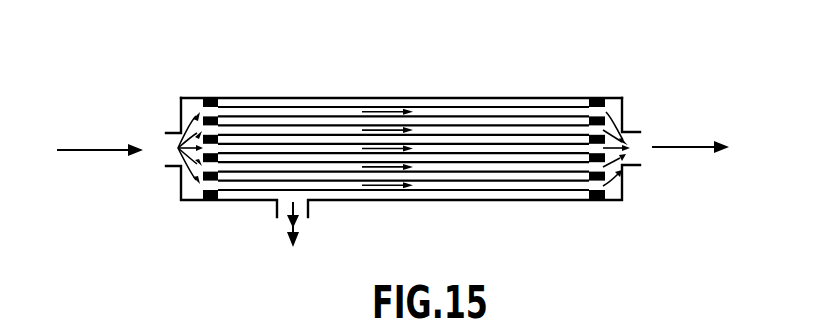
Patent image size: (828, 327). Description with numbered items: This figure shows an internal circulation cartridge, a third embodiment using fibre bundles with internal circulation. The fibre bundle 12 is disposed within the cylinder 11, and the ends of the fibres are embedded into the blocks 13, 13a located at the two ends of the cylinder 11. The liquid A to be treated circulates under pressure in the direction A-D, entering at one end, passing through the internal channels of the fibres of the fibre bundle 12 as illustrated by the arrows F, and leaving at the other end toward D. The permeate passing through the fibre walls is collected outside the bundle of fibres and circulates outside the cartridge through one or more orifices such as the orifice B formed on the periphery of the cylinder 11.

The cylinder 11 is at (515, 200).
The fibre bundle 12 is at (473, 165).
The block 13 is at (211, 98).
The block 13a is at (596, 98).
The arrows F is at (184, 128).
The liquid to be treated A is at (100, 140).
The orifice B is at (294, 238).
The outlet direction D is at (690, 136).